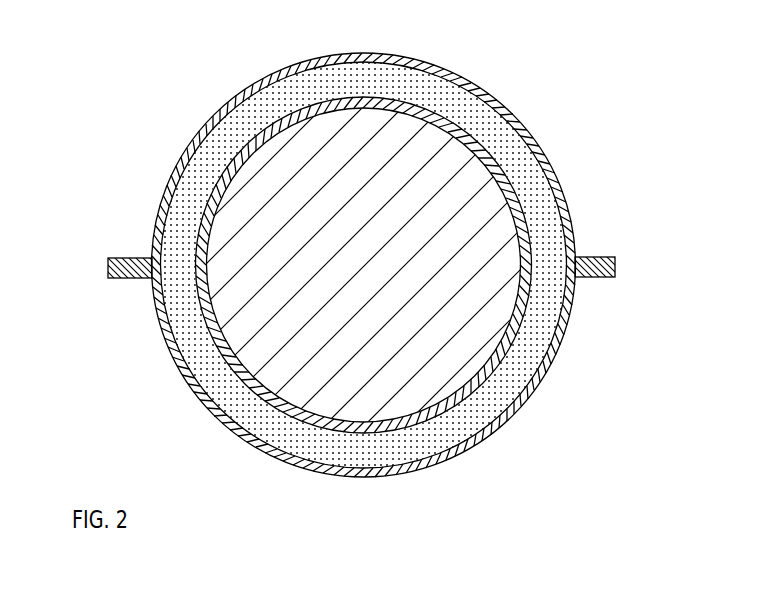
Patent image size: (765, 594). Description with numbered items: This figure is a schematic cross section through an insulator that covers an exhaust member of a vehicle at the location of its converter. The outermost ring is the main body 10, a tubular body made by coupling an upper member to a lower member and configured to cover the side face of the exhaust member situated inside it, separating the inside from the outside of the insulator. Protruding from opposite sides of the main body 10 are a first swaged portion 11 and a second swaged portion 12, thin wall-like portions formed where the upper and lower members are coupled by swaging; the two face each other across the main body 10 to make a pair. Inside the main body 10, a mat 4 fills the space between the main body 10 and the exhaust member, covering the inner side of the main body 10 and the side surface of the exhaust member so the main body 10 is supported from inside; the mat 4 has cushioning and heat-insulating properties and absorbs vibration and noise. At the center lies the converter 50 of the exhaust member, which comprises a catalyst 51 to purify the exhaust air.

The main body 10 is at (385, 279).
The mat 4 is at (542, 345).
The converter 50 is at (508, 383).
The catalyst 51 is at (405, 357).
The first swaged portion 11 is at (616, 266).
The second swaged portion 12 is at (108, 262).